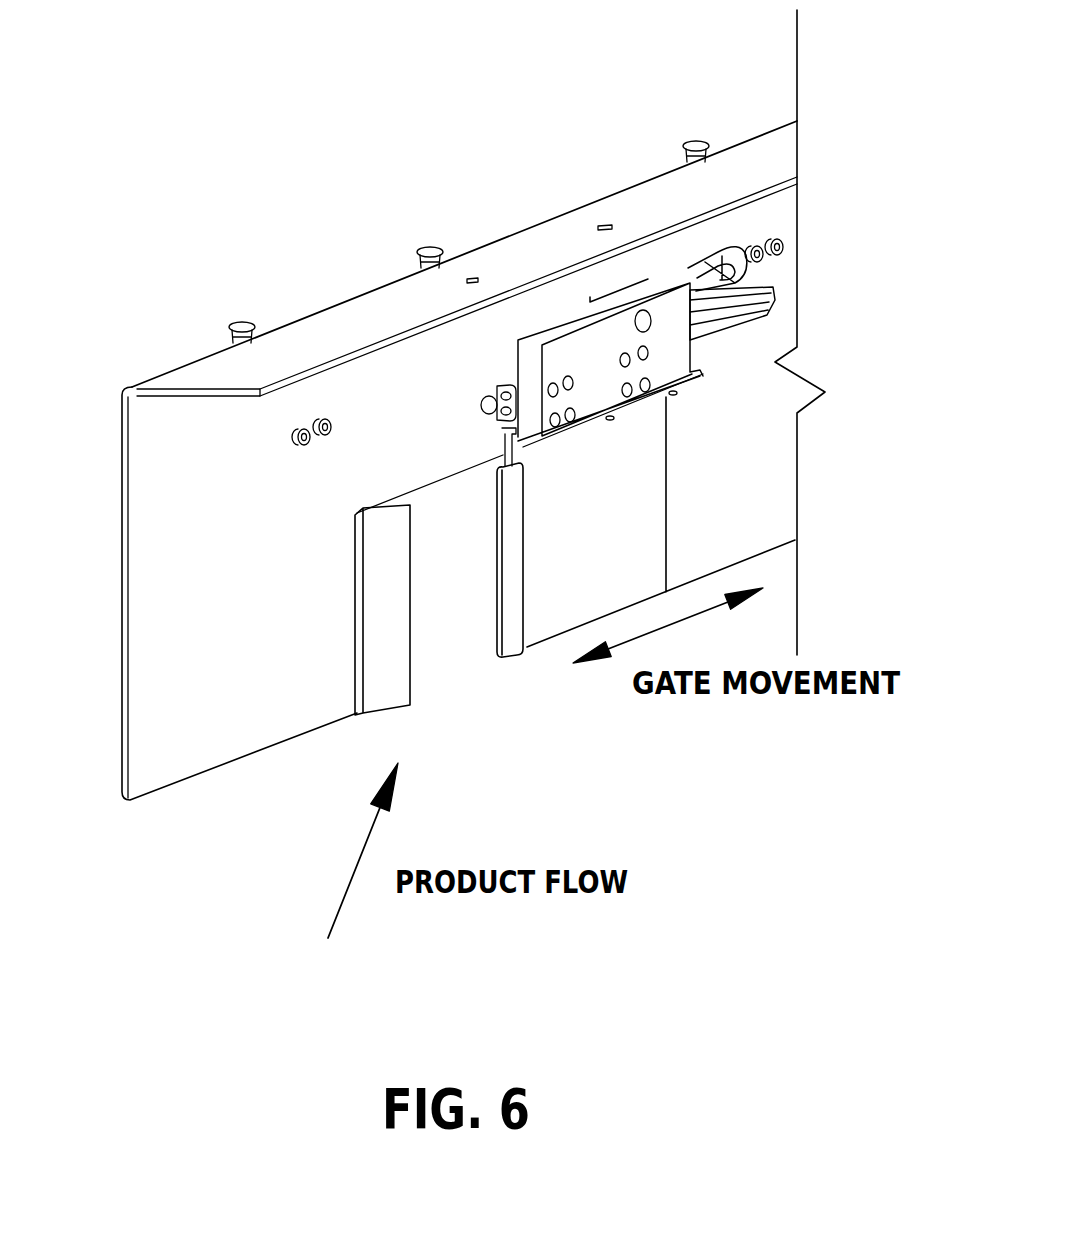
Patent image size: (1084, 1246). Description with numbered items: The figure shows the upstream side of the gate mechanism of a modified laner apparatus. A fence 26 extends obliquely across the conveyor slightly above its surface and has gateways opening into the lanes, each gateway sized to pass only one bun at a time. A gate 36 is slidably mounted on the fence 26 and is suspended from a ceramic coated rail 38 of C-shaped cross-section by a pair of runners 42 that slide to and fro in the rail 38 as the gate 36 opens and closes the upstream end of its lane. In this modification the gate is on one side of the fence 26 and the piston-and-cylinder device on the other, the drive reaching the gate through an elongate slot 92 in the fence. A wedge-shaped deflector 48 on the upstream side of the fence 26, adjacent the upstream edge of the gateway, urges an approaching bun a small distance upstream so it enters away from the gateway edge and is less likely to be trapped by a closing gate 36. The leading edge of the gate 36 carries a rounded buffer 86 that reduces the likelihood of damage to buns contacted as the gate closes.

The fence 26 is at (215, 532).
The gate 36 is at (618, 477).
The rail 38 is at (740, 323).
The runner 42 is at (503, 378).
The wedge-shaped deflector 48 is at (383, 628).
The rounded buffer 86 is at (513, 572).
The elongate slot 92 is at (683, 268).